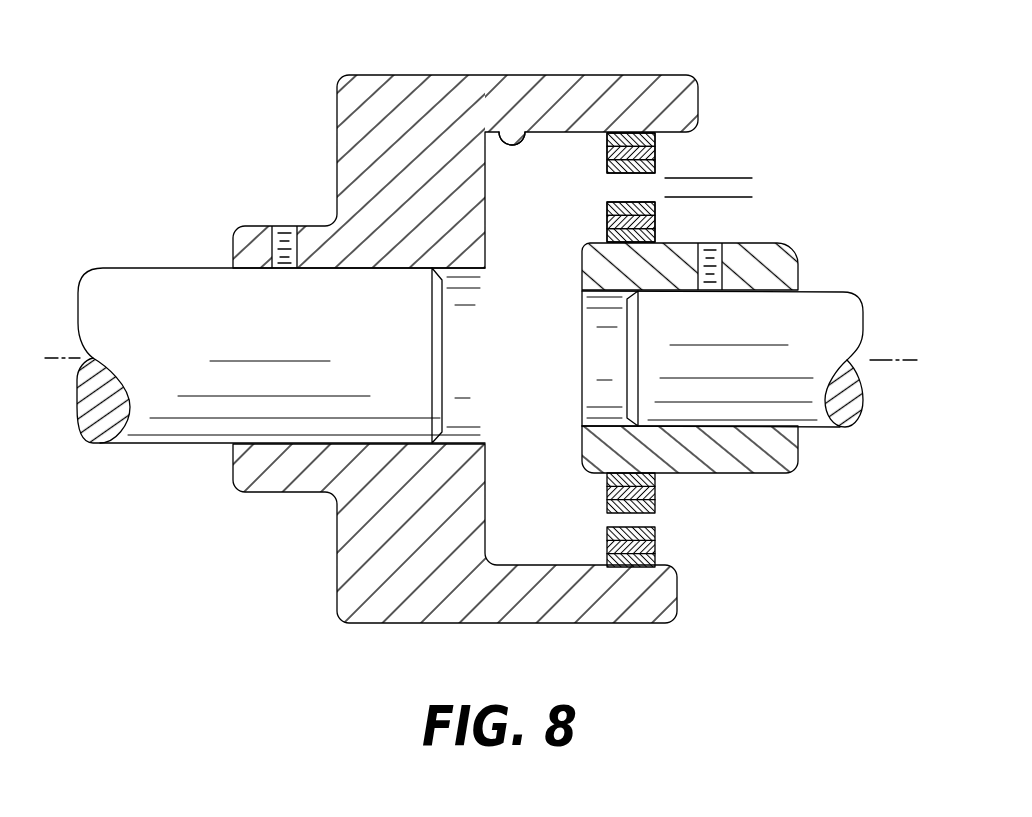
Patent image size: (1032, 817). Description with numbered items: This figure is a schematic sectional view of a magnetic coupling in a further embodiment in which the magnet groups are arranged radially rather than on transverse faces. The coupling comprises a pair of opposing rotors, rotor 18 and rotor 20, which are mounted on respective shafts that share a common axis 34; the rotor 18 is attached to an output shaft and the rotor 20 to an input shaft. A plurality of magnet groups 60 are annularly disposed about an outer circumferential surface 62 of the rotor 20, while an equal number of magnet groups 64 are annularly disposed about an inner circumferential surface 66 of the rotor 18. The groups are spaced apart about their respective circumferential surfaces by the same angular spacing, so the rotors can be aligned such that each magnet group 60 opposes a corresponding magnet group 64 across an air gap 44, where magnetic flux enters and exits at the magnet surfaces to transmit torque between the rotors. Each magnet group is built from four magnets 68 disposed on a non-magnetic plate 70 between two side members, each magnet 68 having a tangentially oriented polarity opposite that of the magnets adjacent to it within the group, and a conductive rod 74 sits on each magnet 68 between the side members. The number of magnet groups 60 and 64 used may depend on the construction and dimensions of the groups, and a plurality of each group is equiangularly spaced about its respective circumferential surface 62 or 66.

The rotor 18 is at (400, 75).
The rotor 20 is at (800, 270).
The axis 34 is at (906, 360).
The air gap 44 is at (728, 230).
The magnet group 60 is at (607, 217).
The outer circumferential surface 62 is at (757, 474).
The magnet group 64 is at (607, 151).
The inner circumferential surface 66 is at (507, 133).
The magnet 68 is at (607, 548).
The non-magnetic plate 70 is at (607, 561).
The conductive rod 74 is at (655, 536).